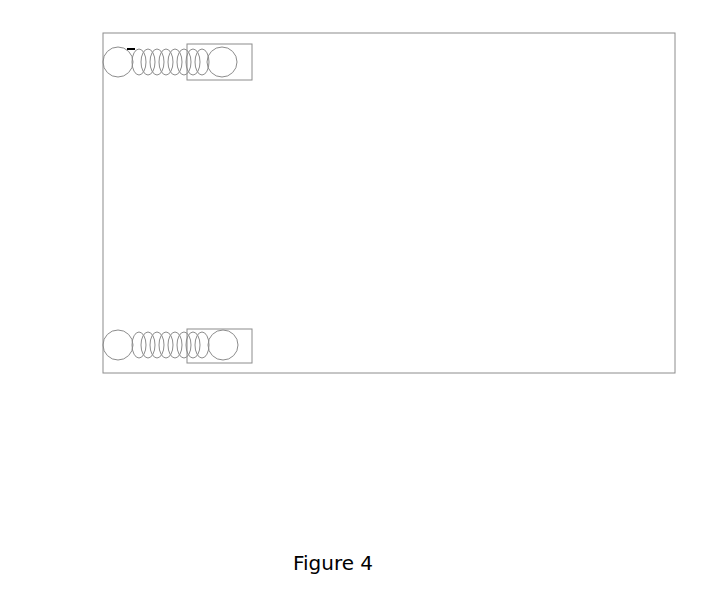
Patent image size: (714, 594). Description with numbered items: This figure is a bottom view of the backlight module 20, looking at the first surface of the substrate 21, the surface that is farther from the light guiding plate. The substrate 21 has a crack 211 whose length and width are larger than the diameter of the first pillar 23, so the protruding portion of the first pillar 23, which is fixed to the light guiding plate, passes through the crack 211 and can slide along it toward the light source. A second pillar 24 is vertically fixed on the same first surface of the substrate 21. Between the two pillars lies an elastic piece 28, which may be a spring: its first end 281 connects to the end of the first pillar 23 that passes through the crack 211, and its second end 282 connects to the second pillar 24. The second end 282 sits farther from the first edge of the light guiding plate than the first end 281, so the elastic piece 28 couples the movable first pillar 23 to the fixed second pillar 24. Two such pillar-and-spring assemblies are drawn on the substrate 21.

The backlight module 20 is at (347, 274).
The substrate 21 is at (513, 296).
The first pillar 23 is at (227, 343).
The second pillar 24 is at (124, 341).
The elastic piece 28 is at (172, 405).
The first end 281 is at (217, 359).
The second end 282 is at (128, 356).
The crack 211 is at (245, 352).